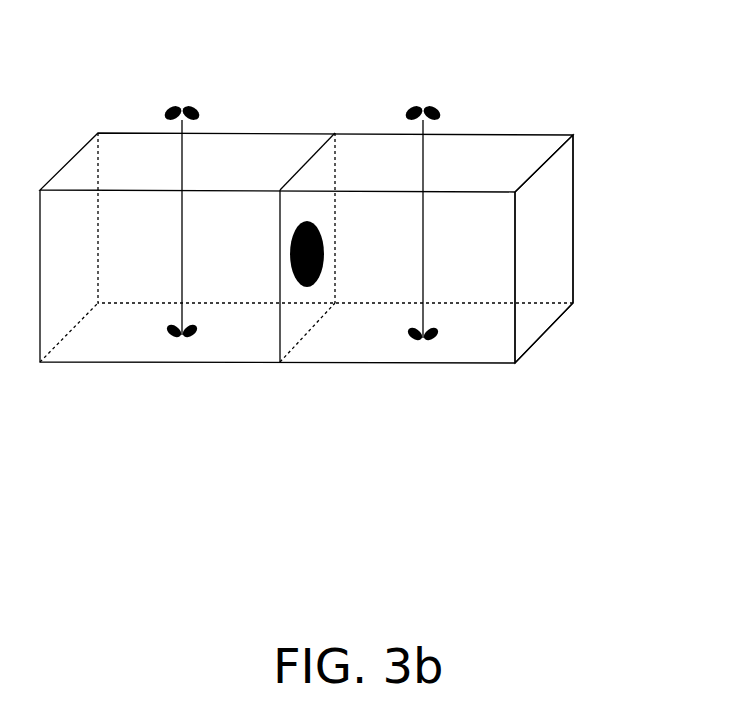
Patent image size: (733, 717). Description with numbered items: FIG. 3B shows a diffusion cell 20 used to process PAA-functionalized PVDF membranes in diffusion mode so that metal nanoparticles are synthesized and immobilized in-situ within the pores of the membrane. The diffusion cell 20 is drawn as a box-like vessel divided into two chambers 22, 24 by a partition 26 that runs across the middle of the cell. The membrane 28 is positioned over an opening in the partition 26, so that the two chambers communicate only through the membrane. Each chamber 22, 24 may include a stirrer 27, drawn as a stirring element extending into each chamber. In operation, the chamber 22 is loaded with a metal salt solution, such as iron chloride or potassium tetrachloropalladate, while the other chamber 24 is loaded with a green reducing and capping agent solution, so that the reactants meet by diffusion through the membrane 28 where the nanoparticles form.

The diffusion cell 20 is at (346, 260).
The chamber 22 is at (120, 330).
The chamber 24 is at (542, 235).
The partition 26 is at (315, 173).
The stirrer 27 is at (170, 343).
The membrane 28 is at (328, 230).